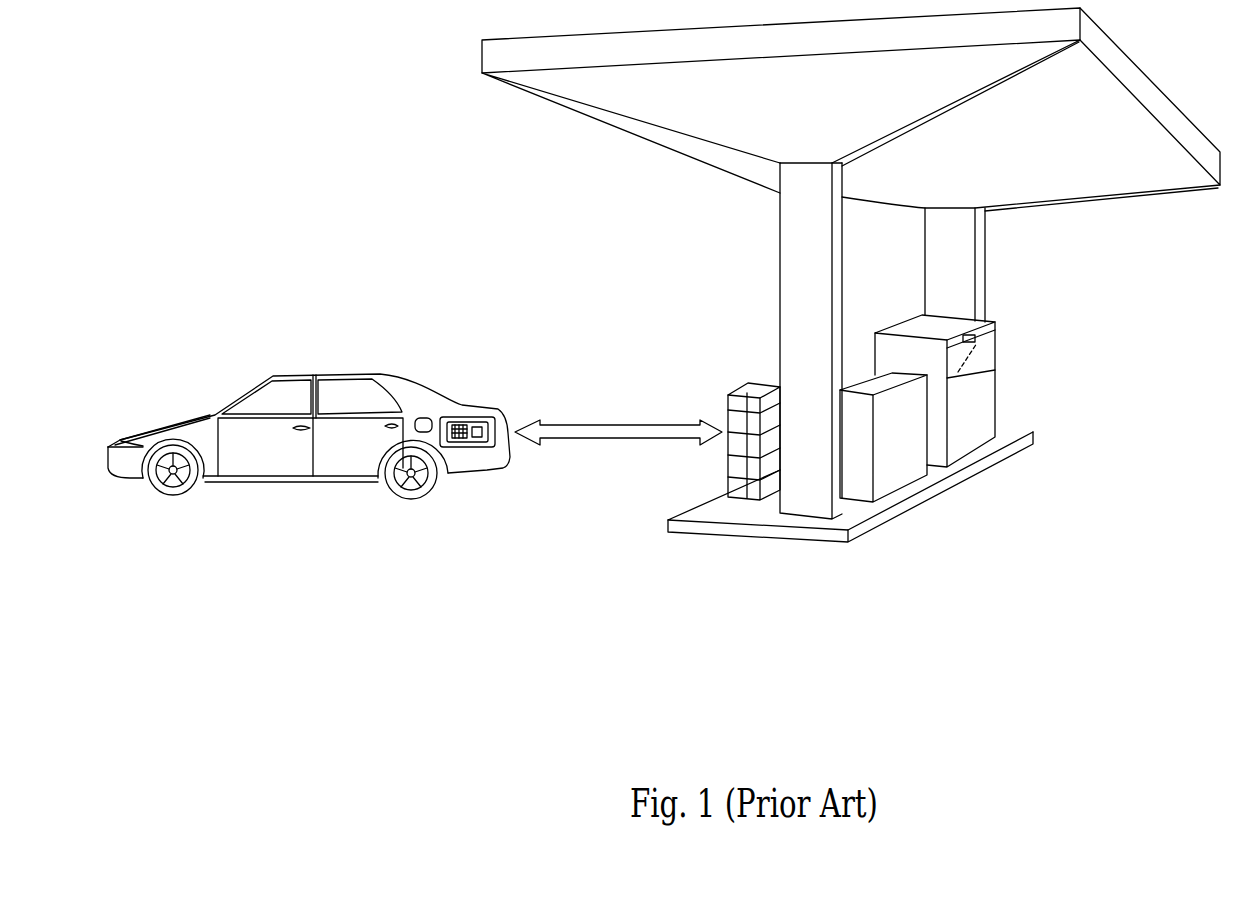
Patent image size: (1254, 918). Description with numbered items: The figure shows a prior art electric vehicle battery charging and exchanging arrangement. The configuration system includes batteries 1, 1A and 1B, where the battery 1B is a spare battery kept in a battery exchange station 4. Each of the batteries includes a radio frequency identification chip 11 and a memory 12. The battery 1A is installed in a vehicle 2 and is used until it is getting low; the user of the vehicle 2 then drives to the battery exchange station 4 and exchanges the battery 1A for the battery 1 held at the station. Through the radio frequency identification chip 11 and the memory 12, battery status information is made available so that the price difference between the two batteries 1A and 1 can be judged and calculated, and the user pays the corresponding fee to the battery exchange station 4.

The battery 1 is at (849, 352).
The battery 1A is at (489, 440).
The spare battery 1B is at (728, 393).
The vehicle 2 is at (323, 414).
The battery exchange station 4 is at (455, 76).
The radio frequency identification chip 11 is at (497, 417).
The memory 12 is at (483, 425).